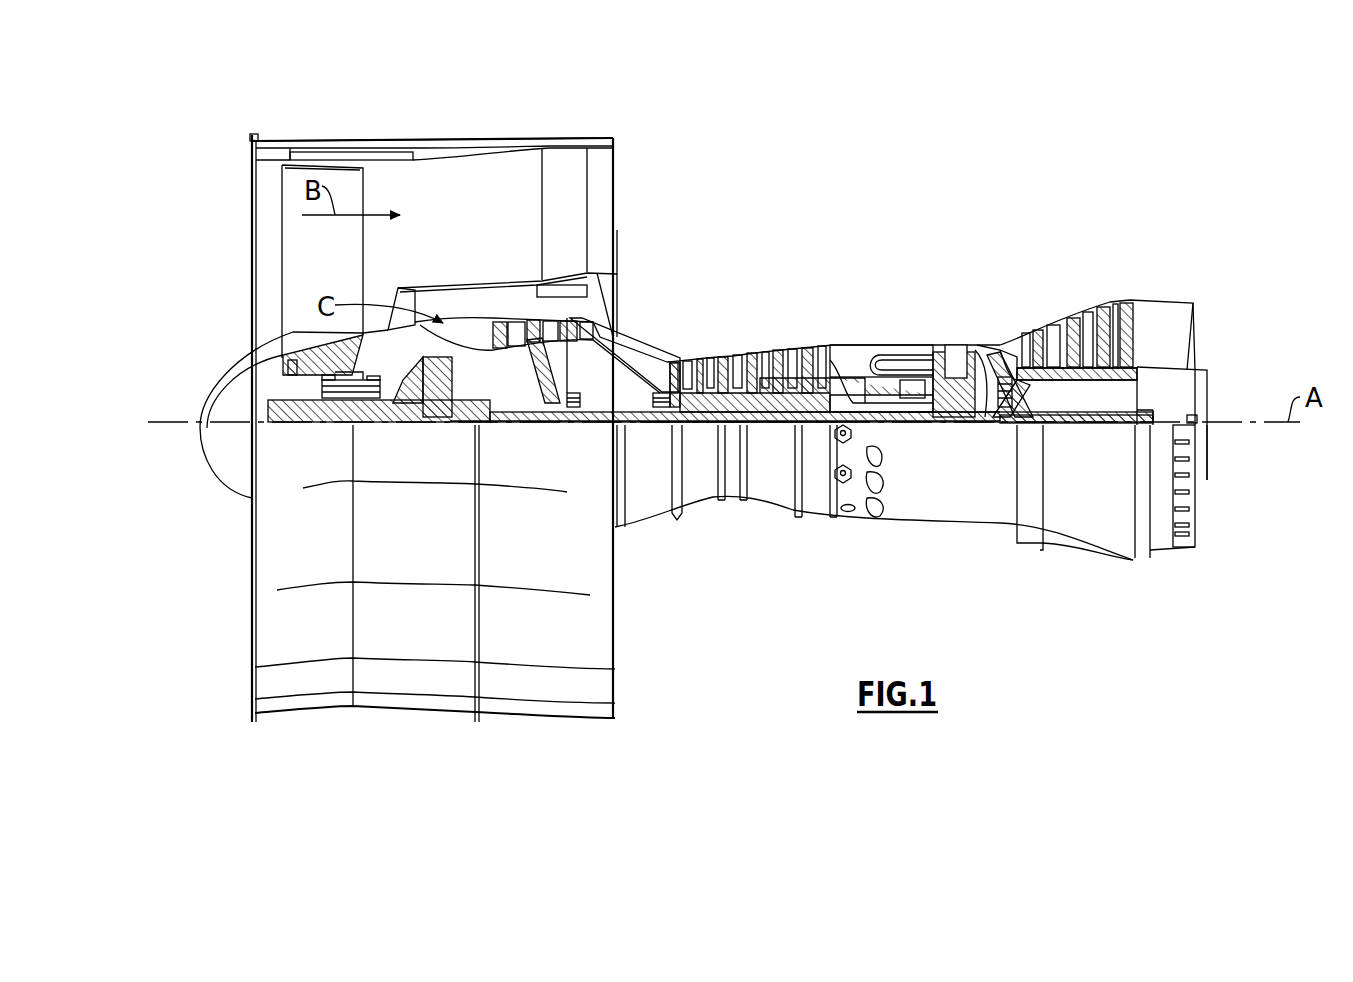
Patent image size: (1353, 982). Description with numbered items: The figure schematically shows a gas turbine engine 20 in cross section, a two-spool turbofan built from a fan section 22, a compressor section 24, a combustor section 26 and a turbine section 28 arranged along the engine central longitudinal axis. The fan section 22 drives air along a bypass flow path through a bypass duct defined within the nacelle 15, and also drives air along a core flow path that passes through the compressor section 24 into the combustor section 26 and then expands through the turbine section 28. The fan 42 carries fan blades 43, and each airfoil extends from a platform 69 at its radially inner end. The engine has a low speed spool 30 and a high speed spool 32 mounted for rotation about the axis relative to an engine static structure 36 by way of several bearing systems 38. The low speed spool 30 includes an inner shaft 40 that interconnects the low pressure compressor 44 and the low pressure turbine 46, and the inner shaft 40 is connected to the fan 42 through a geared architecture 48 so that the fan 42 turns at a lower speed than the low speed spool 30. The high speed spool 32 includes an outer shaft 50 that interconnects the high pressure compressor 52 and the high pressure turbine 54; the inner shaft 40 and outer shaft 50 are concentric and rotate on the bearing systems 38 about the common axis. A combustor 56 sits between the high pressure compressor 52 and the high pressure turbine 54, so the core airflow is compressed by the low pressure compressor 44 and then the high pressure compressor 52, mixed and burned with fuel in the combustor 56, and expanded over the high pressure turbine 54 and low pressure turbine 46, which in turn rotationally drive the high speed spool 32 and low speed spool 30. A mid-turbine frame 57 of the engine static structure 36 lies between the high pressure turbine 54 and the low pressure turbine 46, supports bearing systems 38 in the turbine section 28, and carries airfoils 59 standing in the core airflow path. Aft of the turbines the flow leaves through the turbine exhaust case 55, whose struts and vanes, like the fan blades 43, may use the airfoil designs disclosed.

The nacelle 15 is at (437, 147).
The gas turbine engine 20 is at (893, 193).
The fan section 22 is at (362, 132).
The compressor section 24 is at (667, 333).
The combustor section 26 is at (888, 325).
The turbine section 28 is at (1037, 285).
The low speed spool 30 is at (773, 430).
The high speed spool 32 is at (812, 393).
The engine static structure 36 is at (813, 515).
The bearing systems 38 is at (572, 410).
The inner shaft 40 is at (643, 430).
The fan 42 is at (337, 270).
The fan blade 43 is at (280, 280).
The low pressure compressor 44 is at (525, 332).
The low pressure turbine 46 is at (1083, 310).
The geared architecture 48 is at (442, 407).
The outer shaft 50 is at (880, 405).
The high pressure compressor 52 is at (750, 393).
The high pressure turbine 54 is at (950, 345).
The turbine exhaust case 55 is at (1177, 553).
The combustor 56 is at (888, 368).
The mid-turbine frame 57 is at (998, 335).
The airfoils 59 is at (997, 358).
The platform 69 is at (293, 328).